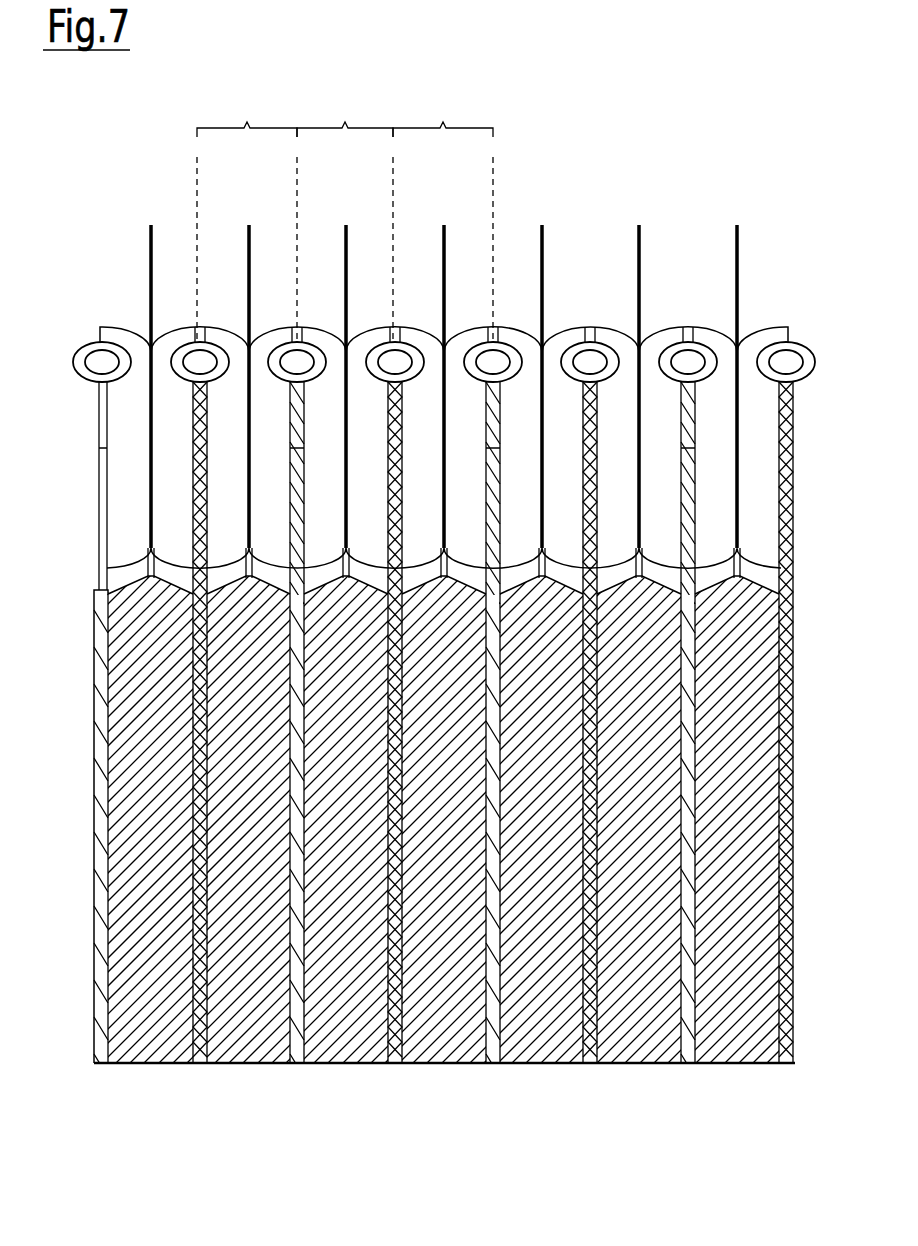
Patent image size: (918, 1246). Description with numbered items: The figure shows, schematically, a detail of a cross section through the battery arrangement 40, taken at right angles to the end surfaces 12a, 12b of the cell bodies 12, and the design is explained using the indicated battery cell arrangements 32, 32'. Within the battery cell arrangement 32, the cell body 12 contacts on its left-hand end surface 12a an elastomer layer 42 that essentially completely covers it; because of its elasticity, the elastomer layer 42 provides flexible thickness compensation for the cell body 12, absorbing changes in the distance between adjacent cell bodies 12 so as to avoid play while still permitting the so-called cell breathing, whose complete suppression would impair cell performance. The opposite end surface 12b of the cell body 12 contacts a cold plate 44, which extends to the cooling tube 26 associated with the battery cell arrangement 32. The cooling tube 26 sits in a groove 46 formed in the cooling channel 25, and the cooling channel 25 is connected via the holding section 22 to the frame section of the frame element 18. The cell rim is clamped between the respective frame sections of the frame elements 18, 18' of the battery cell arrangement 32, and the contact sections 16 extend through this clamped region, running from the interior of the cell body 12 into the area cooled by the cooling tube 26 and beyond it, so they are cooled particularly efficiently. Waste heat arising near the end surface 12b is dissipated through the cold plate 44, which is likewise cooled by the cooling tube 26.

The battery arrangement 40 is at (689, 91).
The battery cell arrangement 32' is at (345, 210).
The battery cell arrangement 32 is at (345, 210).
The frame element 18' is at (418, 246).
The frame element 18 is at (469, 246).
The cooling channel 25 is at (378, 314).
The cooling tube 26 is at (402, 355).
The groove 46 is at (390, 352).
The holding section 22 is at (376, 488).
The contact section 16 is at (345, 268).
The cell body 12 is at (237, 1042).
The end surface 12a is at (310, 1040).
The end surface 12b is at (380, 1040).
The elastomer layer 42 is at (290, 1070).
The cold plate 44 is at (399, 1068).